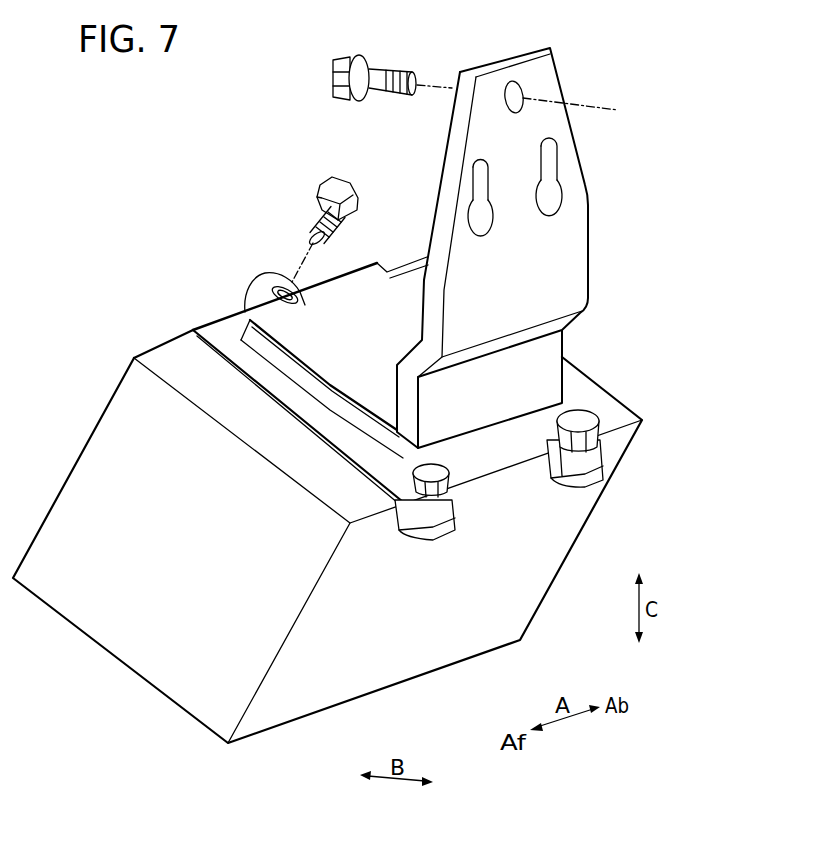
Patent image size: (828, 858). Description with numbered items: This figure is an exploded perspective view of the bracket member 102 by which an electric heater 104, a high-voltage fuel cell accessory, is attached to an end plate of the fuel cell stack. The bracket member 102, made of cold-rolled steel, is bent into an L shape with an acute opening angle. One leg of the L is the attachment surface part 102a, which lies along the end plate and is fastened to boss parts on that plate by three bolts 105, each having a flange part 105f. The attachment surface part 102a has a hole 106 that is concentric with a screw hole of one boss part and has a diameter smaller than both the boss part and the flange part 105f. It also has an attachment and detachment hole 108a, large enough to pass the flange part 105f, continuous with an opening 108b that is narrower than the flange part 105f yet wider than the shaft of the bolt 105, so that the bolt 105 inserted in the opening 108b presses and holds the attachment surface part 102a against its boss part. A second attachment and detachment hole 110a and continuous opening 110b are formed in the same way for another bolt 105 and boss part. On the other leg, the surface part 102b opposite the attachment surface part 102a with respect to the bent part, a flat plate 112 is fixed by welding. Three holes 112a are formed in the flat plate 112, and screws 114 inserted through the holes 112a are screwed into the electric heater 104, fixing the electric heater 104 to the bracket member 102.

The bracket member 102 is at (367, 280).
The attachment surface part 102a is at (512, 248).
The surface part 102b is at (228, 354).
The electric heater 104 is at (120, 647).
The bolt 105 is at (440, 60).
The flange part 105f is at (371, 58).
The hole 106 is at (522, 91).
The attachment and detachment hole 108a is at (556, 191).
The opening 108b is at (555, 148).
The attachment and detachment hole 110a is at (473, 212).
The opening 110b is at (473, 173).
The flat plate 112 is at (253, 380).
The hole 112a is at (283, 272).
The screw 114 is at (322, 186).